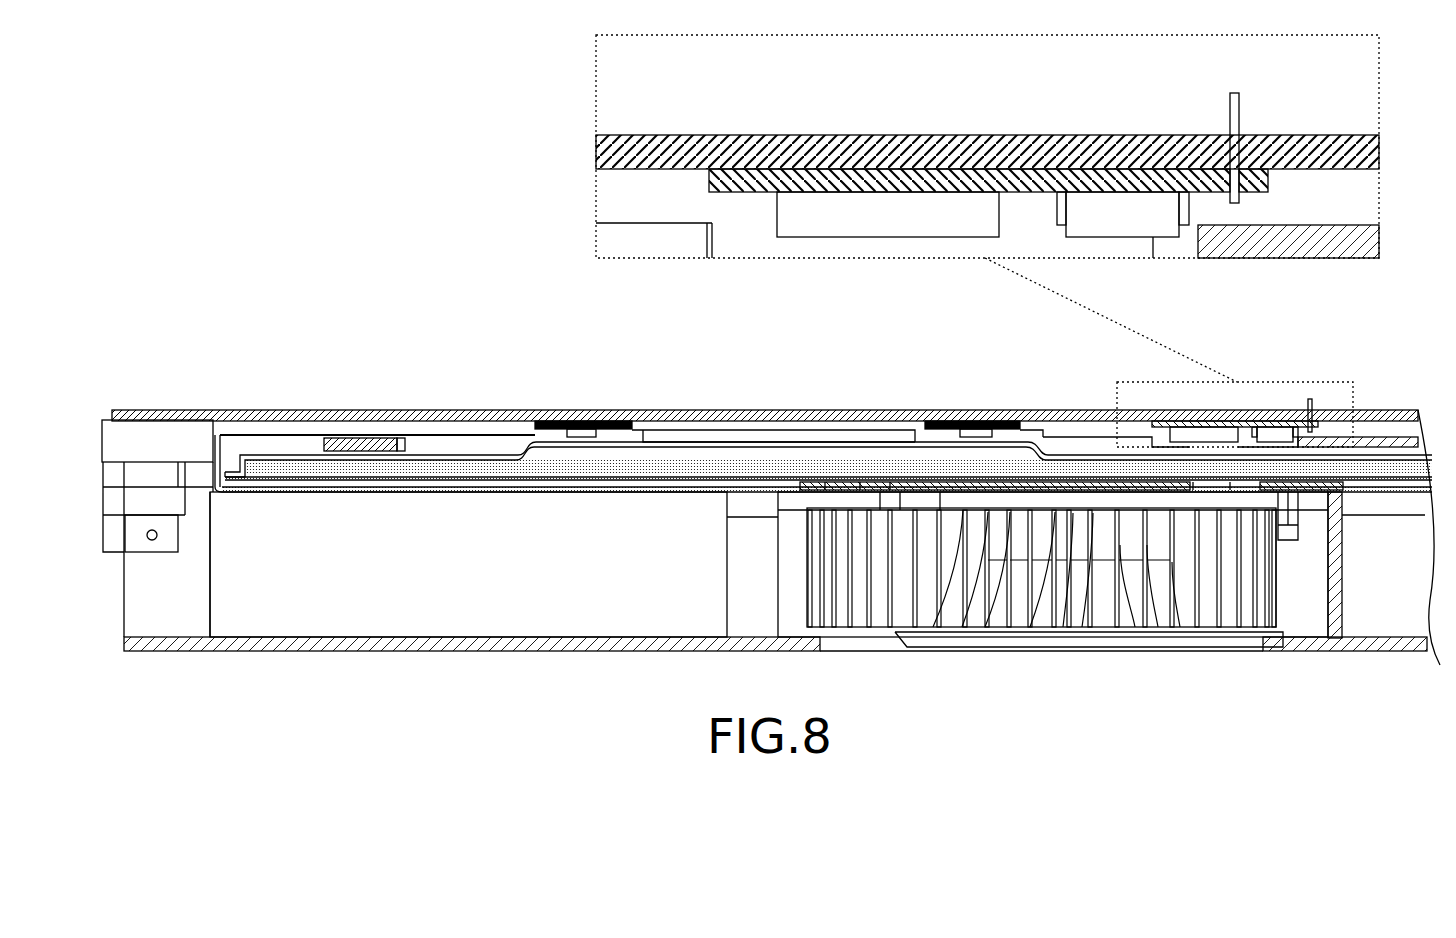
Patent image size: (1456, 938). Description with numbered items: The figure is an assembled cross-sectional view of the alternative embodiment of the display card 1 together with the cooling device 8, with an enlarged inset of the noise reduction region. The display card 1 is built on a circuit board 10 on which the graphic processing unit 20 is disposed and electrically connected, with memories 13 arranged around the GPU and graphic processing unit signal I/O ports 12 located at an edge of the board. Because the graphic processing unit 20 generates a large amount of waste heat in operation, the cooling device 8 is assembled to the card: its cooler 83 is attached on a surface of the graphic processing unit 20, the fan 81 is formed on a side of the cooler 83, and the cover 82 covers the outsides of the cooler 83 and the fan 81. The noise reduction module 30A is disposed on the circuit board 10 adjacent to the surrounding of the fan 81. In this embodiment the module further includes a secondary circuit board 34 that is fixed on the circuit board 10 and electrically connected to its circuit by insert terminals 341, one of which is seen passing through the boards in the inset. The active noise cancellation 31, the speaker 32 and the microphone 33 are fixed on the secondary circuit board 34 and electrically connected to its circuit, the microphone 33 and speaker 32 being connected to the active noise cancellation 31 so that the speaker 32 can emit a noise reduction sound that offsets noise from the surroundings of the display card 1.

The display card 1 is at (228, 407).
The cooling device 8 is at (1360, 668).
The circuit board 10 is at (735, 148).
The graphic processing unit signal I/O port 12 is at (118, 440).
The memory 13 is at (580, 430).
The graphic processing unit 20 is at (780, 430).
The noise reduction module 30A is at (752, 222).
The active noise cancellation 31 is at (845, 222).
The speaker 32 is at (1122, 222).
The microphone 33 is at (1185, 205).
The secondary circuit board 34 is at (1015, 180).
The insert terminal 341 is at (1240, 108).
The fan 81 is at (1073, 612).
The cover 82 is at (592, 645).
The cooler 83 is at (352, 595).